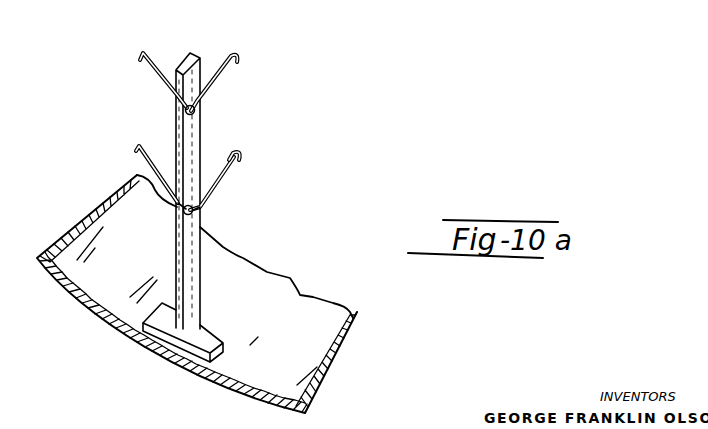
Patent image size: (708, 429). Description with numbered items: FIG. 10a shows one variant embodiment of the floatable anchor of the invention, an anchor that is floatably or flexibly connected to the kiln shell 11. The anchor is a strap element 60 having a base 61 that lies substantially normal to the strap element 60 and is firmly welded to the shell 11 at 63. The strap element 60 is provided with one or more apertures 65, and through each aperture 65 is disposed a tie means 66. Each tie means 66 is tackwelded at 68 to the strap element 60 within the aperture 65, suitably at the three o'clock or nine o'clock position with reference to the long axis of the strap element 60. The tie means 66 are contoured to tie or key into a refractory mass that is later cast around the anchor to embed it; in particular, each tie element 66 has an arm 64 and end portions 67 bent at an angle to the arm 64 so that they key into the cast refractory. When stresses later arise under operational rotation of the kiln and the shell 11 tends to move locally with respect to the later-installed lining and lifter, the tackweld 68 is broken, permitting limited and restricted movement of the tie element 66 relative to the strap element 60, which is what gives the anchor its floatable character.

The shell 11 is at (112, 327).
The strap element 60 is at (202, 140).
The base 61 is at (207, 338).
The weld location 63 is at (160, 337).
The arm 64 is at (177, 210).
The aperture 65 is at (197, 116).
The tie means 66 is at (233, 57).
The end portion 67 is at (242, 154).
The tackweld 68 is at (186, 113).